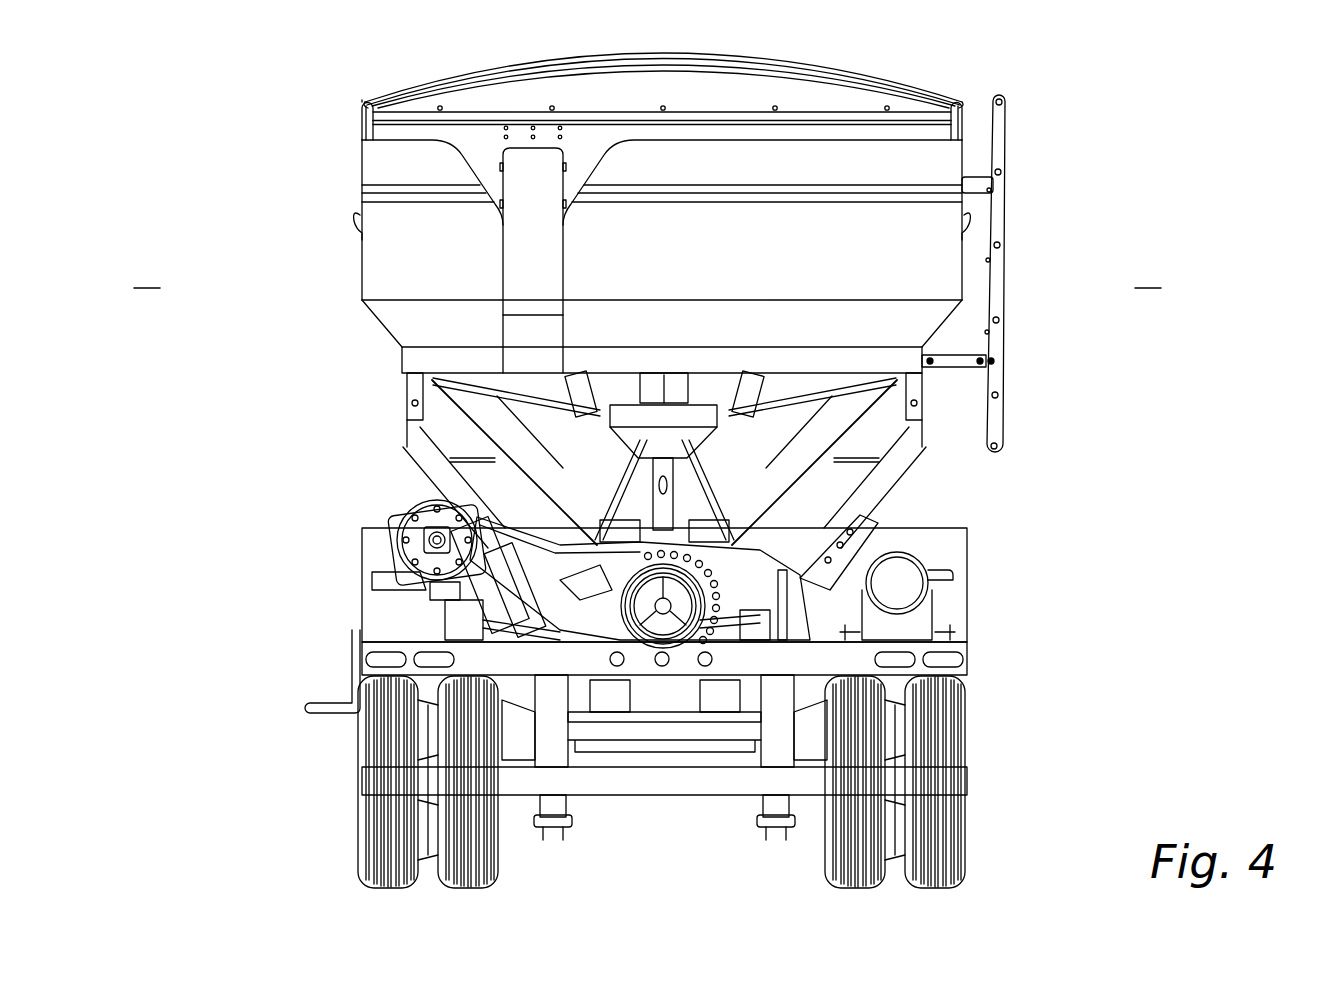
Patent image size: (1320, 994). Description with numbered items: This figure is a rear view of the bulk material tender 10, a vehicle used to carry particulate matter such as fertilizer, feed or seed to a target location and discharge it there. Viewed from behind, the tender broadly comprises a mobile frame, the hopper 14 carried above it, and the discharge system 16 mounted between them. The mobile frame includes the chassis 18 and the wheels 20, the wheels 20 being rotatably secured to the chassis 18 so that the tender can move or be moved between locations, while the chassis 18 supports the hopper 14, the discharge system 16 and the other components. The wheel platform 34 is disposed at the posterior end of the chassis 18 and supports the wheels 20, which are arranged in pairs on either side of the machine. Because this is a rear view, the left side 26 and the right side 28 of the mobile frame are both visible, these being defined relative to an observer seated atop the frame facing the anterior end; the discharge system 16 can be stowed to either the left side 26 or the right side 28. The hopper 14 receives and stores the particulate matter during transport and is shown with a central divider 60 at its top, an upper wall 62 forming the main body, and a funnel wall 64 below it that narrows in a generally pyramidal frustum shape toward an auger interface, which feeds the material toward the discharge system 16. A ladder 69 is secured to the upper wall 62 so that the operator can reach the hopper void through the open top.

The bulk material tender 10 is at (328, 100).
The hopper 14 is at (320, 198).
The discharge system 16 is at (381, 509).
The chassis 18 is at (652, 820).
The wheels 20 is at (470, 866).
The left side 26 is at (160, 288).
The right side 28 is at (1161, 288).
The wheel platform 34 is at (972, 646).
The central divider 60 is at (745, 80).
The upper wall 62 is at (378, 285).
The funnel wall 64 is at (480, 413).
The ladder 69 is at (1000, 150).